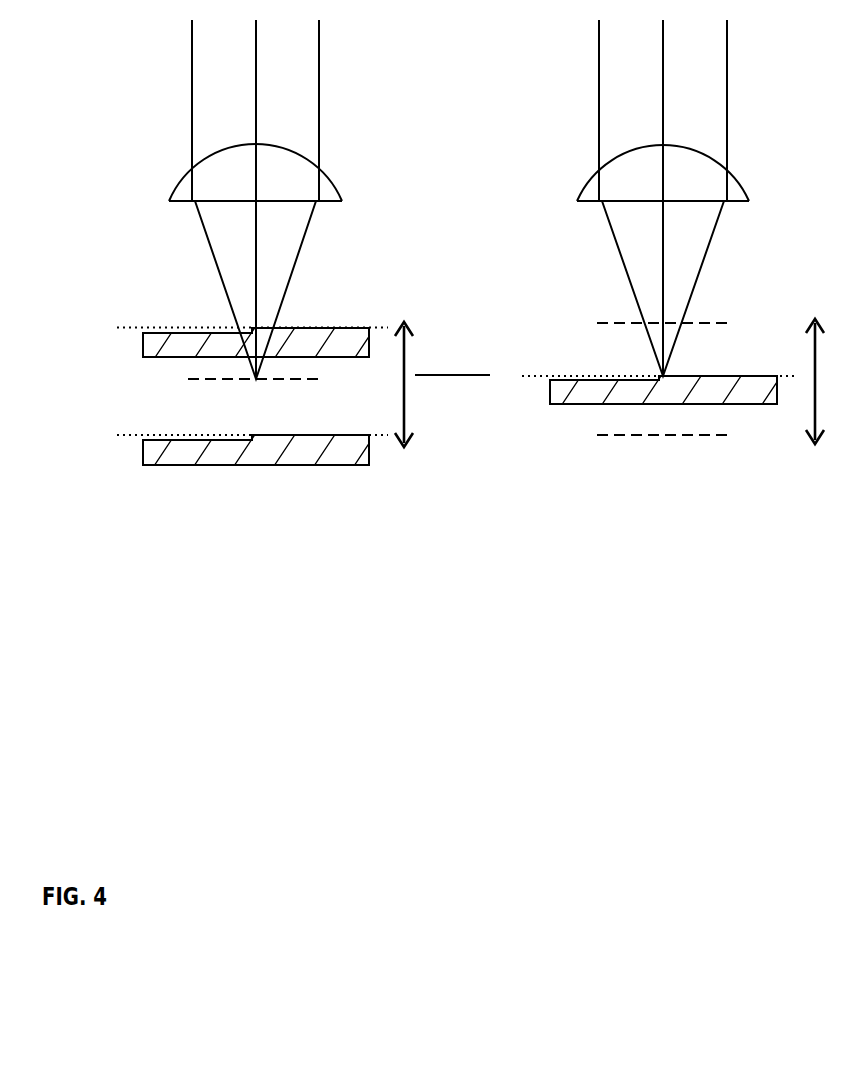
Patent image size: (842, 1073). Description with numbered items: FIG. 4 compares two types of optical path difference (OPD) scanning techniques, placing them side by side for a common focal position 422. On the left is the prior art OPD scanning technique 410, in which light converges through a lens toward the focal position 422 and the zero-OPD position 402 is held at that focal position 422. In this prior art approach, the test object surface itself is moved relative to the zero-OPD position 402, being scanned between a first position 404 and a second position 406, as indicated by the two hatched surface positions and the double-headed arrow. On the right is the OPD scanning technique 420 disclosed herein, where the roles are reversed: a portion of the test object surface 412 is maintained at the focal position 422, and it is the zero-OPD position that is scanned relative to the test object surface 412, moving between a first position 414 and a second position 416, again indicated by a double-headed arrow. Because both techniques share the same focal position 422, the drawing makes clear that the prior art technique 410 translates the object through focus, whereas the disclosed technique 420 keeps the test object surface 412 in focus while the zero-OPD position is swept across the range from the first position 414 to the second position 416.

The zero-OPD position 402 is at (188, 380).
The first position 404 is at (108, 326).
The second position 406 is at (108, 435).
The prior art OPD scanning technique 410 is at (208, 530).
The test object surface 412 is at (514, 373).
The first position 414 is at (590, 322).
The second position 416 is at (590, 433).
The OPD scanning technique 420 is at (540, 530).
The focal position 422 is at (468, 380).